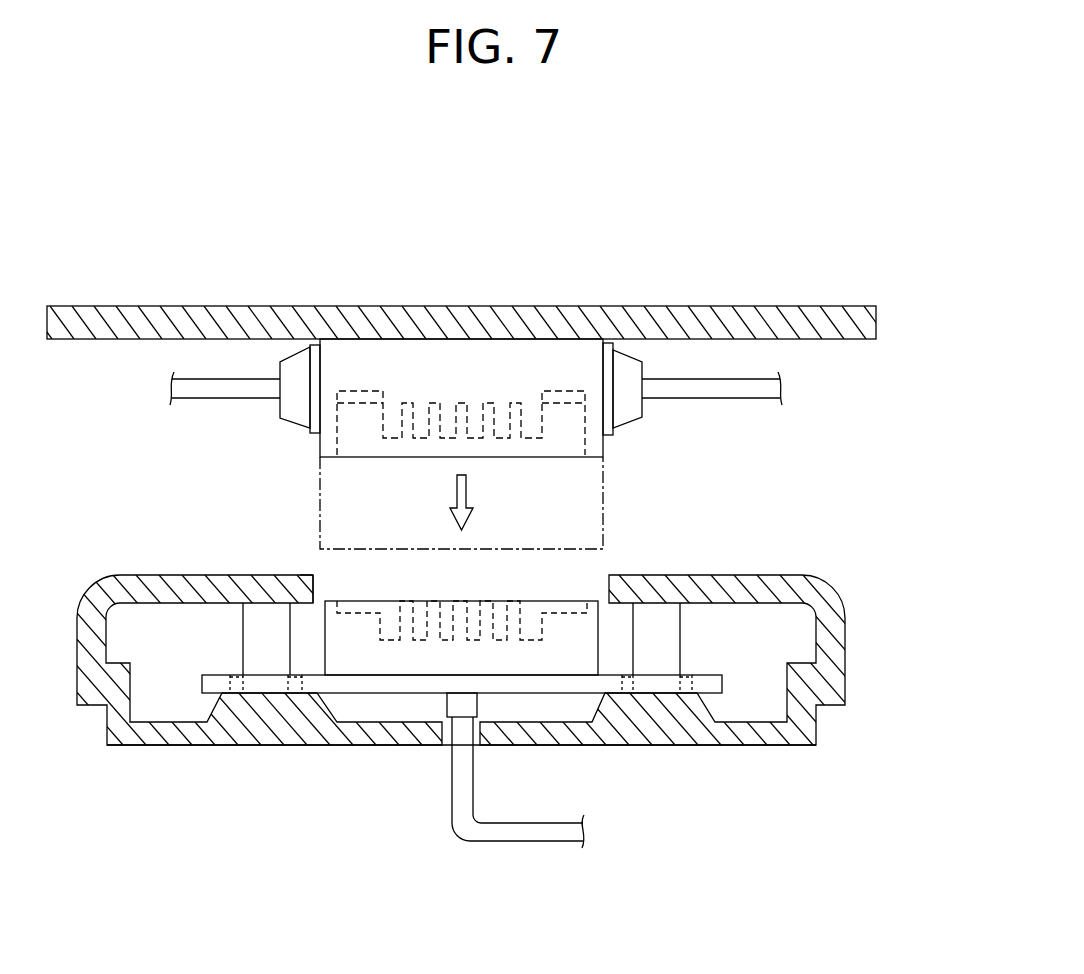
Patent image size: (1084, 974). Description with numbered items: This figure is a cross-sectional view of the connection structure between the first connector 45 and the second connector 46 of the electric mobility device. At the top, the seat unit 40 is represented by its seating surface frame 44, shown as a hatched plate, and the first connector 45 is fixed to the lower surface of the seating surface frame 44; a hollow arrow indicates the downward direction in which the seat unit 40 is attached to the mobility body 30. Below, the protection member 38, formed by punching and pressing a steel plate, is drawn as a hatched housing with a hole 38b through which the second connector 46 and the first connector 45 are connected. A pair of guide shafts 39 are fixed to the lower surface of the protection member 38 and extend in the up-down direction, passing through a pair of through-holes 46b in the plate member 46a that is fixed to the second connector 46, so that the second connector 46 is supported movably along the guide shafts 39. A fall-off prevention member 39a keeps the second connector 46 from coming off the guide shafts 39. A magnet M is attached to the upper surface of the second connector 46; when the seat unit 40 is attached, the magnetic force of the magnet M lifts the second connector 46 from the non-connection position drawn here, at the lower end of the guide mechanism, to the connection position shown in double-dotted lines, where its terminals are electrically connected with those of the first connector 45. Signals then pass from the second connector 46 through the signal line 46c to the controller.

The mobility body 30 is at (487, 721).
The protection member 38 is at (846, 635).
The hole 38b is at (313, 586).
The guide shafts 39 is at (243, 640).
The fall-off prevention member 39a is at (762, 748).
The seat unit 40 is at (458, 355).
The seating surface frame 44 is at (707, 307).
The first connector 45 is at (614, 442).
The second connector 46 is at (598, 602).
The plate member 46a is at (377, 684).
The through-holes 46b is at (243, 682).
The signal line 46c is at (533, 842).
The magnet M is at (360, 603).